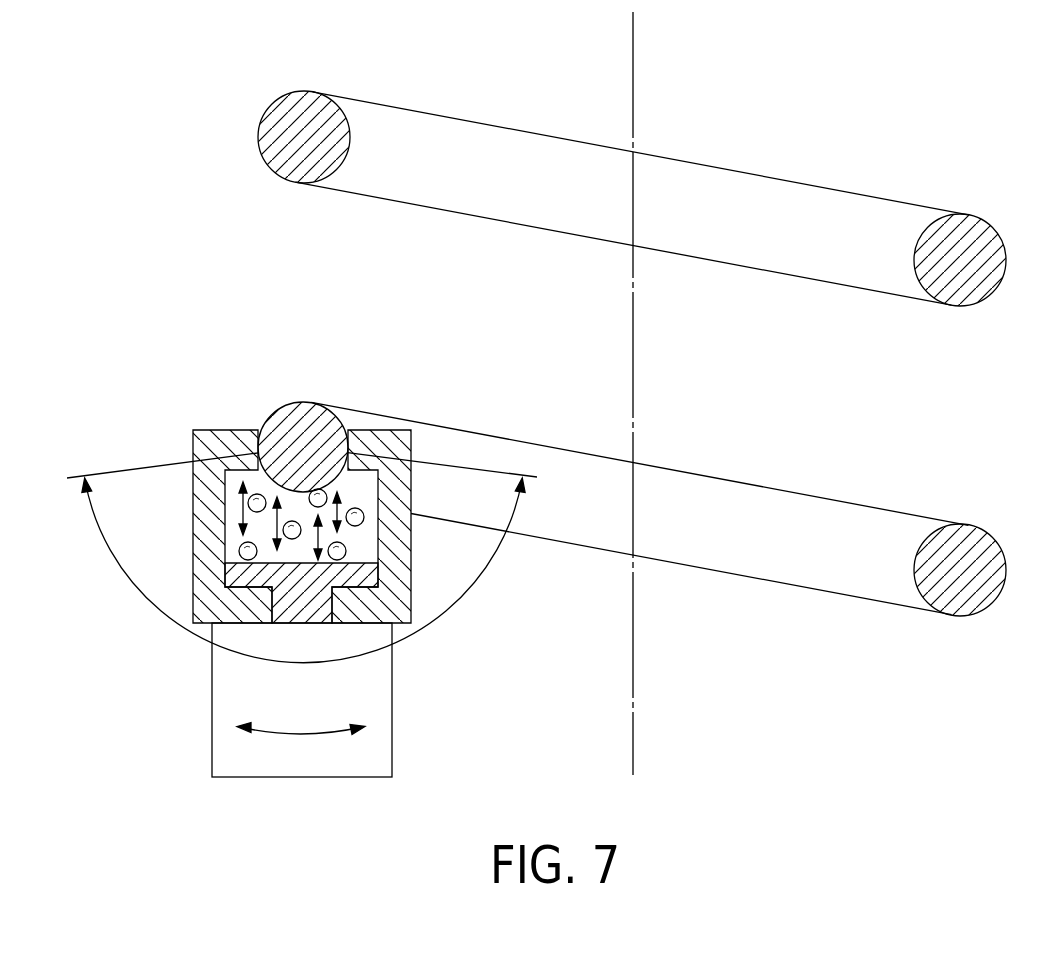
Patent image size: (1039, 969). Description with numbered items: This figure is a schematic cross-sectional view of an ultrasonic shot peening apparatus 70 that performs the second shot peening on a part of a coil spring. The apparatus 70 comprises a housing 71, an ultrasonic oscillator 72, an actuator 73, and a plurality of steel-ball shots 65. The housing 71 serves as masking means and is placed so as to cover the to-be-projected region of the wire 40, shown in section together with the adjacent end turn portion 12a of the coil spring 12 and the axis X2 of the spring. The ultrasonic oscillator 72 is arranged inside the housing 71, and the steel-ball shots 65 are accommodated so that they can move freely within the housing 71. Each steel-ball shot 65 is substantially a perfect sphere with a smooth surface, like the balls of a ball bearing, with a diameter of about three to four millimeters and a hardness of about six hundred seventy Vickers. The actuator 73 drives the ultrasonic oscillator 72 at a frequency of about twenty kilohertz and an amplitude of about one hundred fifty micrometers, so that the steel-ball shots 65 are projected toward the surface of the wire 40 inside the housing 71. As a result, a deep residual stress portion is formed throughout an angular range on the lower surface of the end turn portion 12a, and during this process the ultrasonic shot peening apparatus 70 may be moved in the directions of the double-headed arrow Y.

The guide rod 12 is at (260, 95).
The end turn portion 12a is at (549, 540).
The wire 40 is at (302, 410).
The steel-ball shots 65 is at (347, 551).
The ultrasonic shot peening apparatus 70 is at (162, 417).
The housing 71 is at (226, 430).
The ultrasonic oscillator 72 is at (240, 549).
The actuator 73 is at (212, 690).
The axis X2 is at (633, 357).
The double-headed arrow Y is at (300, 777).